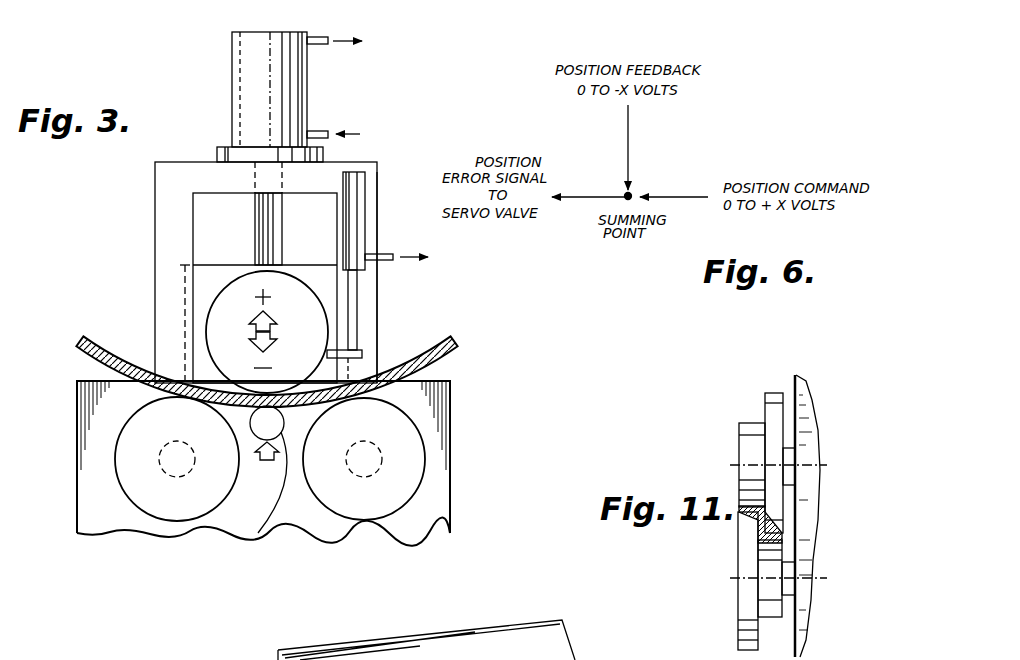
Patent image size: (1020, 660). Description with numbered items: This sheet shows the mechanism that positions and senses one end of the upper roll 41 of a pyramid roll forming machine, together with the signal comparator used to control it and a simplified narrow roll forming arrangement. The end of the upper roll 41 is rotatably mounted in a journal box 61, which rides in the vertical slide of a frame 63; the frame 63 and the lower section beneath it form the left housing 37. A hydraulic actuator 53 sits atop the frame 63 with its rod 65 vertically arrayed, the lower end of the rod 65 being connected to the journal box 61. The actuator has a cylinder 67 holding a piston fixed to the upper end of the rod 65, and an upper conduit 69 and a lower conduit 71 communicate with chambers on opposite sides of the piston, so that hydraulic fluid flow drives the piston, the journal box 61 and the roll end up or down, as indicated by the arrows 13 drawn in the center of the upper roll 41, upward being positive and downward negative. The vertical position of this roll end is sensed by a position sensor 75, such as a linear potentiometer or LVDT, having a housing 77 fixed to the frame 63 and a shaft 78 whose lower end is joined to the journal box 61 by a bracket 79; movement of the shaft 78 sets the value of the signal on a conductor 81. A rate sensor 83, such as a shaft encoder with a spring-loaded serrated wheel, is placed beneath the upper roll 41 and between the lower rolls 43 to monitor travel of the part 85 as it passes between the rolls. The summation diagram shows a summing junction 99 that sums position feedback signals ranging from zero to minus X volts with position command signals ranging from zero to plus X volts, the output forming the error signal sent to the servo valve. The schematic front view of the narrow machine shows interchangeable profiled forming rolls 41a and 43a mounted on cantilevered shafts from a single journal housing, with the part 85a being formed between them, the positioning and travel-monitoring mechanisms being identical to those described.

In FIG. 3, the bidirectional movement arrow of forming roll 13 is at (263, 318).
In FIG. 3, the left housing 37 is at (442, 398).
In FIG. 3, the upper roll 41 is at (220, 318).
In FIG. 3, the lower rolls 43 is at (176, 505).
In FIG. 3, the hydraulic actuator 53 is at (222, 77).
In FIG. 3, the journal box 61 is at (205, 280).
In FIG. 3, the frame 63 is at (372, 305).
In FIG. 3, the rod 65 is at (262, 222).
In FIG. 3, the cylinder 67 is at (277, 43).
In FIG. 3, the upper conduit 69 is at (317, 34).
In FIG. 3, the lower conduit 71 is at (315, 128).
In FIG. 3, the position sensor 75 is at (365, 204).
In FIG. 3, the housing 77 is at (358, 182).
In FIG. 3, the shaft 78 is at (357, 323).
In FIG. 3, the bracket 79 is at (372, 350).
In FIG. 3, the conductor 81 is at (388, 252).
In FIG. 3, the rate sensor 83 is at (258, 533).
In FIG. 3, the part 85 is at (437, 347).
In FIG. 6, the summing junction 99 is at (638, 192).
In FIG. 11, the upper profiled forming roll 41a is at (745, 437).
In FIG. 11, the lower profiled forming roll 43a is at (745, 605).
In FIG. 11, the workpiece (alternate embodiment) 85a is at (762, 523).